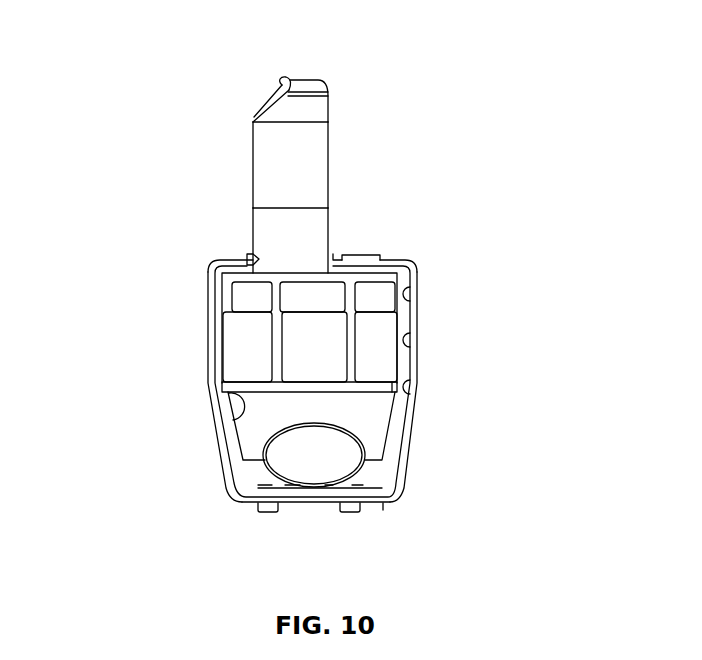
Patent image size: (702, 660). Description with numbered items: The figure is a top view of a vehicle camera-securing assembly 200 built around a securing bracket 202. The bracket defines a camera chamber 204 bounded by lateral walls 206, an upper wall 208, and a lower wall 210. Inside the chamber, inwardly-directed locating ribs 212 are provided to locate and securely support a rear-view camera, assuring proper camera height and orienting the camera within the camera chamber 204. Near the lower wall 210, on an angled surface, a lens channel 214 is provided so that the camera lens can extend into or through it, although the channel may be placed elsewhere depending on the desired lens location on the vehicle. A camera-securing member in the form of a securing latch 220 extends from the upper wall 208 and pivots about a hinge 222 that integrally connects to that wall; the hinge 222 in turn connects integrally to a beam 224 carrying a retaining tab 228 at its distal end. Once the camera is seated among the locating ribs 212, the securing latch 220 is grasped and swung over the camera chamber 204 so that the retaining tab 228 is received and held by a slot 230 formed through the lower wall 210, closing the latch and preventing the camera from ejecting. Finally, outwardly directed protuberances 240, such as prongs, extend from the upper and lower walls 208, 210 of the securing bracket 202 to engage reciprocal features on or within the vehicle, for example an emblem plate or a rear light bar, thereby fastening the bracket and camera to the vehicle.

The vehicle camera-securing assembly 200 is at (118, 183).
The securing bracket 202 is at (417, 298).
The camera chamber 204 is at (327, 358).
The lateral walls 206 is at (207, 393).
The upper wall 208 is at (405, 257).
The lower wall 210 is at (383, 512).
The locating ribs 212 is at (278, 302).
The lens channel 214 is at (325, 460).
The securing latch 220 is at (330, 170).
The hinge 222 is at (325, 243).
The beam 224 is at (253, 203).
The retaining tab 228 is at (316, 80).
The slot 230 is at (307, 503).
The protuberances 240 is at (360, 258).